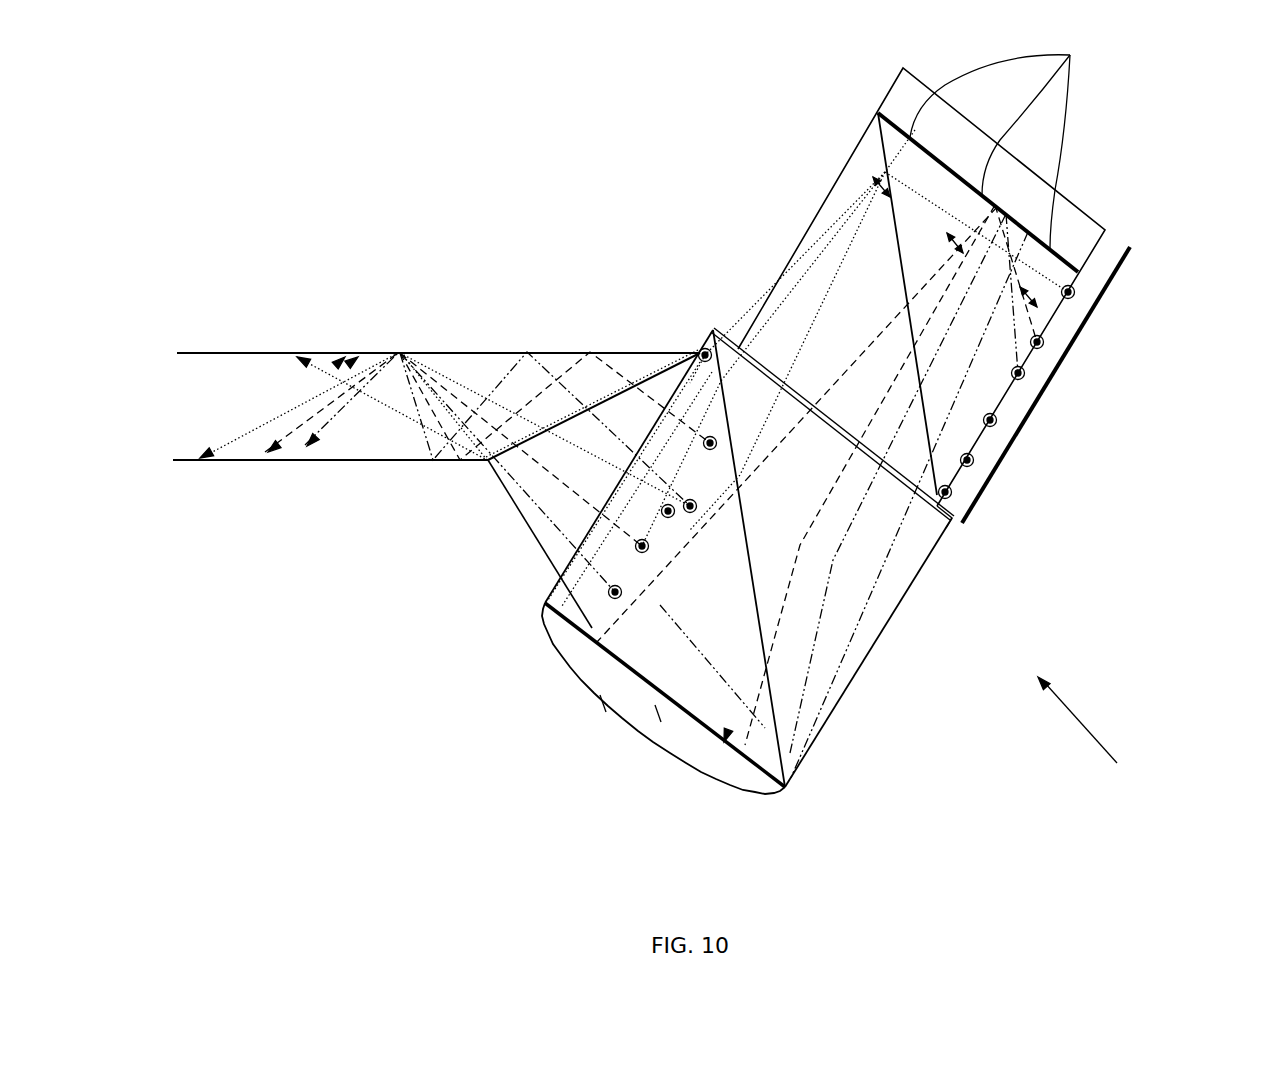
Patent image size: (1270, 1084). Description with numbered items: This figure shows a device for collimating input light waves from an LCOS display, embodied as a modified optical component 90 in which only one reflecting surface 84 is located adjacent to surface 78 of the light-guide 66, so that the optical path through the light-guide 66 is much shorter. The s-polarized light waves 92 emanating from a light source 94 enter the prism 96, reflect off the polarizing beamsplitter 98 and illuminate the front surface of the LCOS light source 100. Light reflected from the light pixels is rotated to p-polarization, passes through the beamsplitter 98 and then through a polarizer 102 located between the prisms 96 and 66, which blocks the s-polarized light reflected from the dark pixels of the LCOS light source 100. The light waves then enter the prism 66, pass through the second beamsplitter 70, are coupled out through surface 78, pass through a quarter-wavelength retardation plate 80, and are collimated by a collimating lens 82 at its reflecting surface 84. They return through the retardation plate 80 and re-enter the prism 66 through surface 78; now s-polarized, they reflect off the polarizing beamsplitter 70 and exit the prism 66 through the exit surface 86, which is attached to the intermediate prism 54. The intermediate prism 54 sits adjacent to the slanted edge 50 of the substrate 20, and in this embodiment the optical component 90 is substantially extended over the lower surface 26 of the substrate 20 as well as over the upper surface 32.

The substrate 20 is at (277, 398).
The lower surface 26 is at (213, 463).
The upper surface 32 is at (477, 352).
The slanted edge 50 is at (663, 367).
The intermediate prism 54 is at (637, 420).
The light-guide 66 is at (838, 609).
The second beamsplitter 70 is at (777, 717).
The surface 78 is at (724, 745).
The quarter-wavelength retardation plate 80 is at (547, 603).
The collimating lens 82 is at (658, 713).
The reflecting surface 84 is at (603, 707).
The exit surface 86 is at (565, 600).
The optical component 90 is at (1092, 732).
The s-polarized light waves 92 is at (1032, 377).
The light source 94 is at (1135, 247).
The prism 96 is at (847, 307).
The polarizing beamsplitter 98 is at (880, 148).
The LCOS light source 100 is at (1070, 55).
The polarizer 102 is at (952, 518).